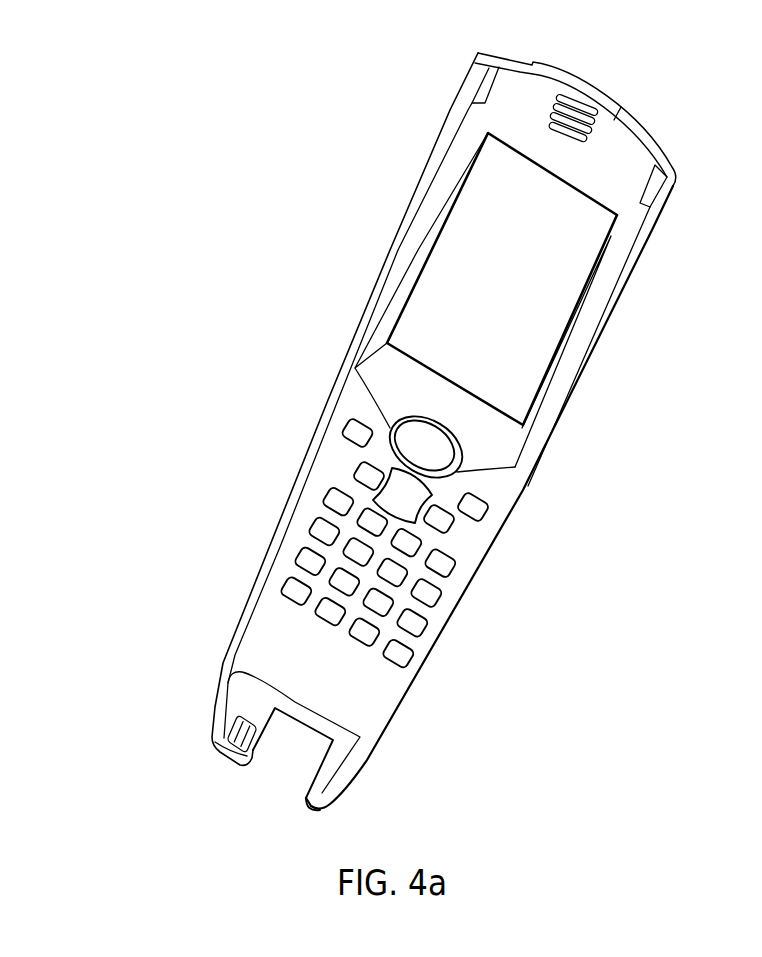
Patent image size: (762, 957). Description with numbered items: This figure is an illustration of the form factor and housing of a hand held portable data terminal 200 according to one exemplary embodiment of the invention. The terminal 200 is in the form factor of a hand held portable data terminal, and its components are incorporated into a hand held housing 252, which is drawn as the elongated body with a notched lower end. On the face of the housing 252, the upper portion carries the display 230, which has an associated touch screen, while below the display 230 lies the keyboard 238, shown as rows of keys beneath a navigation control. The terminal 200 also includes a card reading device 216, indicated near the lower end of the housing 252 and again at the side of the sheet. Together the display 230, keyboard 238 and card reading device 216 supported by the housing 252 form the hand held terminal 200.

The terminal 200 is at (656, 109).
The display 230 is at (600, 229).
The keyboard 238 is at (466, 535).
The hand held housing 252 is at (373, 708).
The card reading device 216 is at (273, 787).